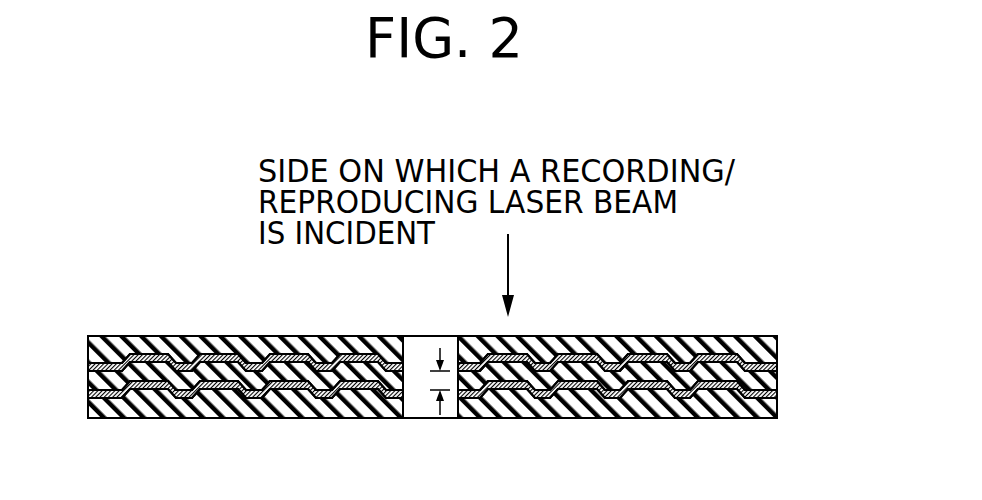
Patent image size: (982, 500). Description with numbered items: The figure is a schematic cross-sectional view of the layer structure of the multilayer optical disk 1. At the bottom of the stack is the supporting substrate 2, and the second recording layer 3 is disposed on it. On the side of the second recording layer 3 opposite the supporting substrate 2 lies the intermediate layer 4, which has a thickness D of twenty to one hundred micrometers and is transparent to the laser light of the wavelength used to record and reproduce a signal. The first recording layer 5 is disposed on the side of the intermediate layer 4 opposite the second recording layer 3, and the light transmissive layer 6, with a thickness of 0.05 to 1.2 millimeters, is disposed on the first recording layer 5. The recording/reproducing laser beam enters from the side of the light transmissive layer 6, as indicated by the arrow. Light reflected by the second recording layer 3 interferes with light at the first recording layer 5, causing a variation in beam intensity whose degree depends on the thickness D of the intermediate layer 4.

The multilayer optical disk 1 is at (463, 357).
The supporting substrate 2 is at (777, 415).
The second recording layer 3 is at (777, 394).
The intermediate layer 4 is at (777, 377).
The first recording layer 5 is at (777, 367).
The light transmissive layer 6 is at (777, 340).